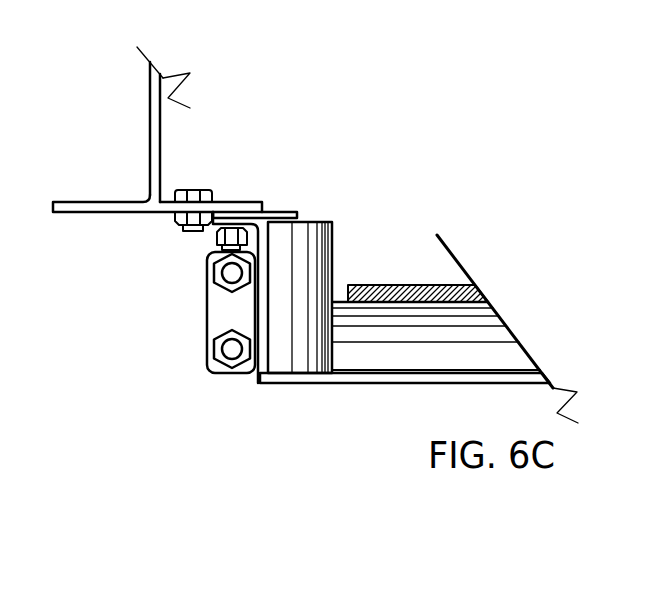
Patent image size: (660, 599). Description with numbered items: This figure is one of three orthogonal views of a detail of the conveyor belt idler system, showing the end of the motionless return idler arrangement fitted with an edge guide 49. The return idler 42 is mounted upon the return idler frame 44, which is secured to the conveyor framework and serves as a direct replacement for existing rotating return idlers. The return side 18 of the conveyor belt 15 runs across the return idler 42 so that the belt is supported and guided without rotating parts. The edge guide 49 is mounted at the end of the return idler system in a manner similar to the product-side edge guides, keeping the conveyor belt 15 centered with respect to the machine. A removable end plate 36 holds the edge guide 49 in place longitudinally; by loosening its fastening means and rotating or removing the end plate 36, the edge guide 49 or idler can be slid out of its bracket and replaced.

The removable end plate 36 is at (282, 213).
The edge guide 49 is at (315, 240).
The return side 18 is at (363, 283).
The conveyor belt 15 is at (475, 287).
The return idler 42 is at (512, 352).
The return idler frame 44 is at (413, 383).